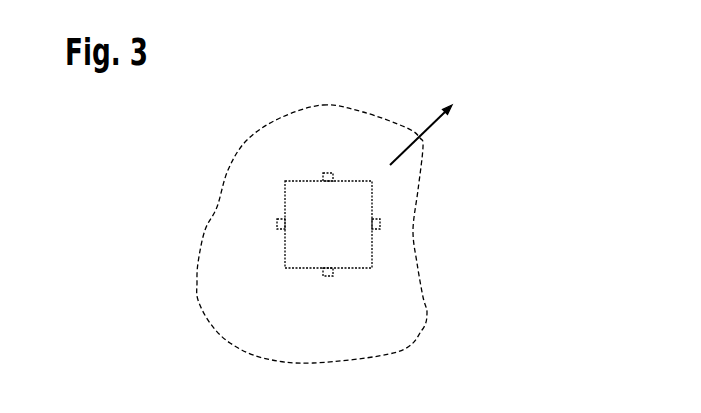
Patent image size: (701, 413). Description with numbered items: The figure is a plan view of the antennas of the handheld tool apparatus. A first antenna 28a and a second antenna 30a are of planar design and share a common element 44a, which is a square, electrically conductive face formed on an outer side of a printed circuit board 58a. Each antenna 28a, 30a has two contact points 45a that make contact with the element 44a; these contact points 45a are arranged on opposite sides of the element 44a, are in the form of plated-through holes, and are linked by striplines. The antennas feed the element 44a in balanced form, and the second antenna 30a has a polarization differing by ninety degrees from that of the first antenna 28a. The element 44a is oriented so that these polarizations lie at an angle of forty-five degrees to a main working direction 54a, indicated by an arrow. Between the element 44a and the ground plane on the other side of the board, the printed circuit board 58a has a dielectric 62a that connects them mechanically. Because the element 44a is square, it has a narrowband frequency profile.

The first antenna 28a is at (327, 138).
The second antenna 30a is at (402, 235).
The element 44a is at (358, 253).
The contact points 45a is at (323, 175).
The main working direction 54a is at (422, 137).
The printed circuit board 58a is at (213, 176).
The dielectric 62a is at (228, 328).